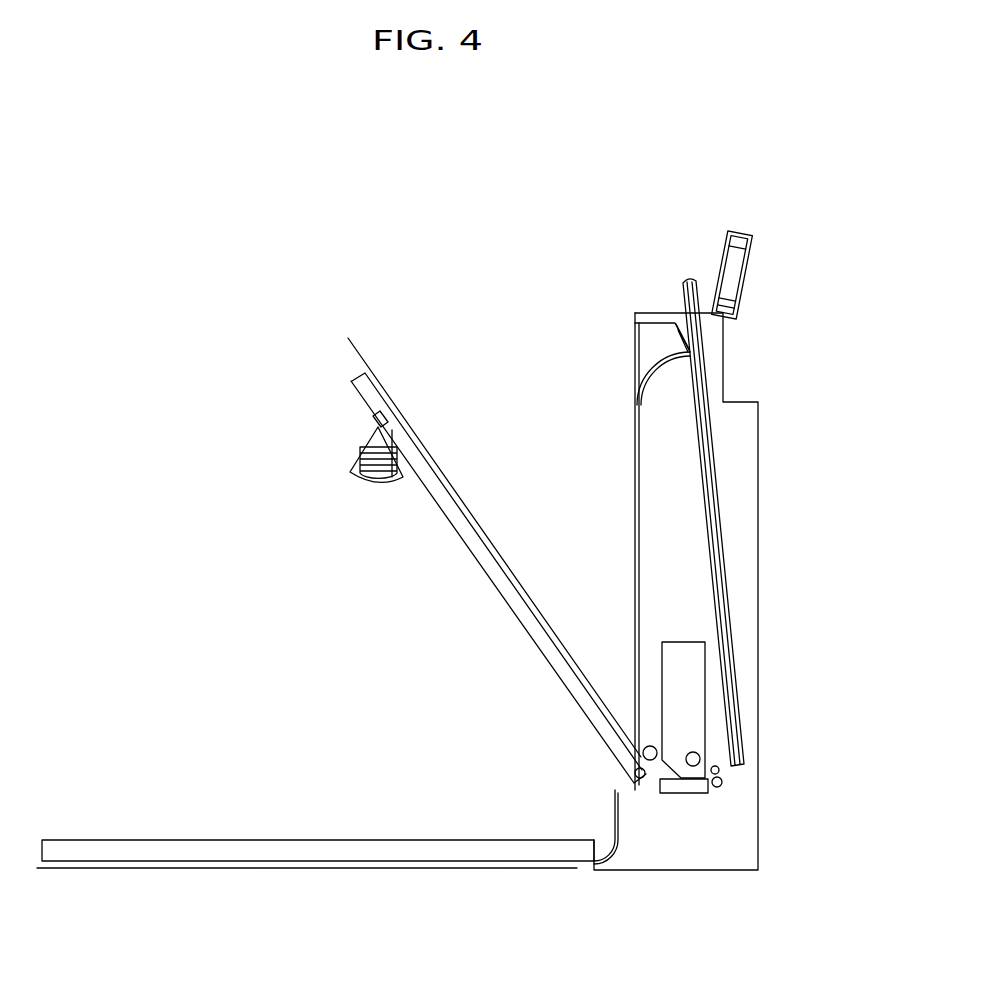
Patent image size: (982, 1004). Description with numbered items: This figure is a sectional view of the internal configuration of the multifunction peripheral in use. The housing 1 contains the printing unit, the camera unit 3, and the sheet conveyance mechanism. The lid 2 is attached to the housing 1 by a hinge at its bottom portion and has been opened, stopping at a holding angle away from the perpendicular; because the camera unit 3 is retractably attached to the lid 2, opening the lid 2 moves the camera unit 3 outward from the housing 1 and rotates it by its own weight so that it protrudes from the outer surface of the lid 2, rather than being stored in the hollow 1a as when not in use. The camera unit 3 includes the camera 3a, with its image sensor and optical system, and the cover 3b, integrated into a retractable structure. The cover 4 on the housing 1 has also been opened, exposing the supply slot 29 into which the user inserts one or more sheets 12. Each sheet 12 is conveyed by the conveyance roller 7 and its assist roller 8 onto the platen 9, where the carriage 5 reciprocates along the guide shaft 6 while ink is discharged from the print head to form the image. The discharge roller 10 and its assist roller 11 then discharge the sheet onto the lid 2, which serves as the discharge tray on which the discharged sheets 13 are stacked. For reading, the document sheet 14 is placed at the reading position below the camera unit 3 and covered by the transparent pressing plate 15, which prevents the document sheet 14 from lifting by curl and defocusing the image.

The housing 1 is at (746, 455).
The hollow 1a is at (648, 357).
The lid 2 is at (567, 687).
The camera unit 3 is at (282, 413).
The camera 3a is at (375, 460).
The cover 3b is at (373, 422).
The cover 4 is at (740, 233).
The carriage 5 is at (667, 658).
The guide shaft 6 is at (700, 760).
The conveyance roller 7 is at (720, 787).
The assist roller 8 is at (720, 770).
The platen 9 is at (690, 795).
The discharge roller 10 is at (635, 775).
The assist roller 11 is at (650, 745).
The sheet 12 is at (690, 281).
The discharged sheets 13 is at (352, 340).
The document sheet 14 is at (303, 870).
The pressing plate 15 is at (182, 840).
The supply slot 29 is at (682, 318).